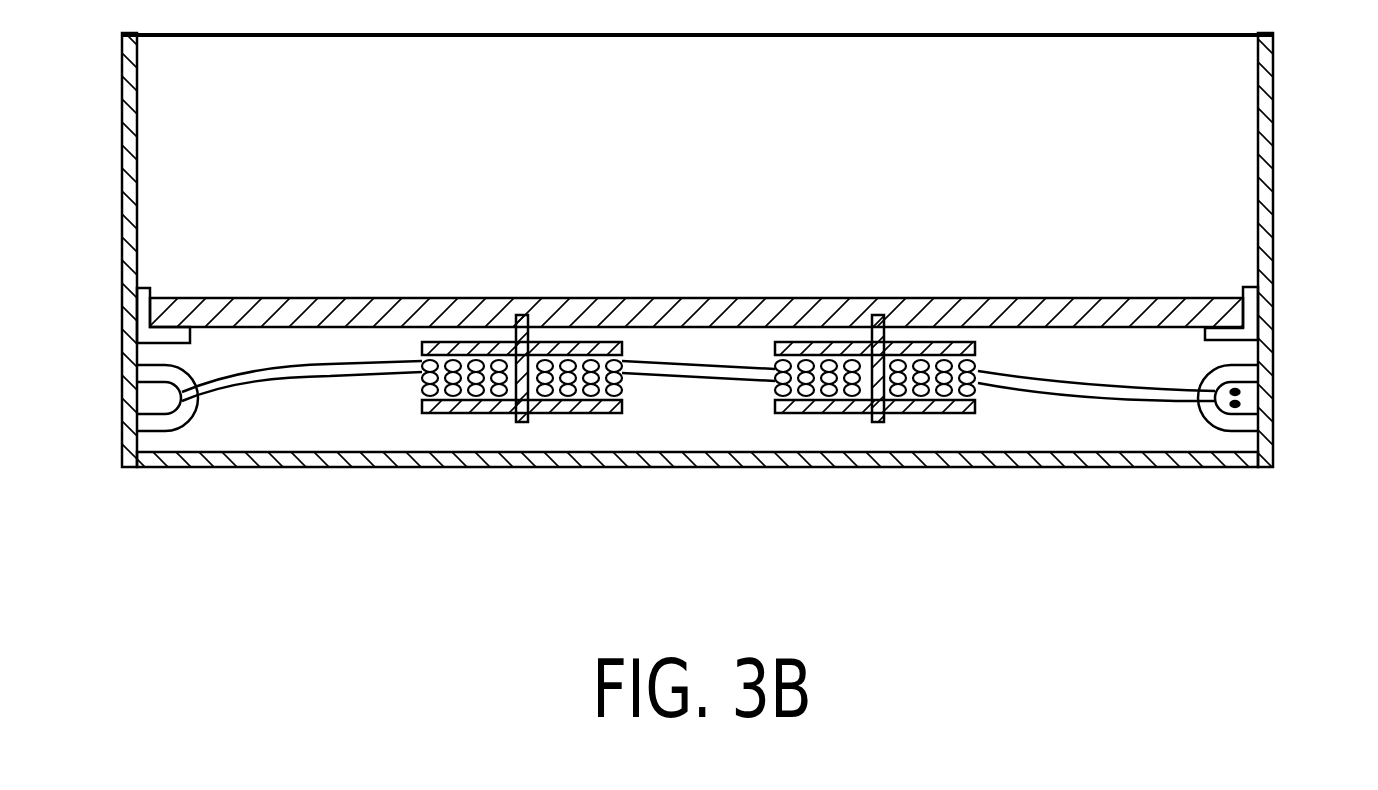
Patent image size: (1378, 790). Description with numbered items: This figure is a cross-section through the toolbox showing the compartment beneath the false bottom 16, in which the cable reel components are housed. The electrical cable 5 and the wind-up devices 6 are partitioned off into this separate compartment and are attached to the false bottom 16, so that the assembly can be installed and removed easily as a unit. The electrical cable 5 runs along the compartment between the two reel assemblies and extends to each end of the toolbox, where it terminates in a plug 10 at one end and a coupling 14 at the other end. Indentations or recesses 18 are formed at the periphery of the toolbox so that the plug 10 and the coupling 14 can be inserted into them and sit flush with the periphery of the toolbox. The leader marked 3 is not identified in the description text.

The wire 3 is at (1115, 403).
The electrical cable 5 is at (775, 413).
The wind-up device 6 is at (522, 422).
The plug 10 is at (152, 402).
The coupling 14 is at (1248, 397).
The false bottom 16 is at (1178, 297).
The indentation or recess 18 is at (160, 367).